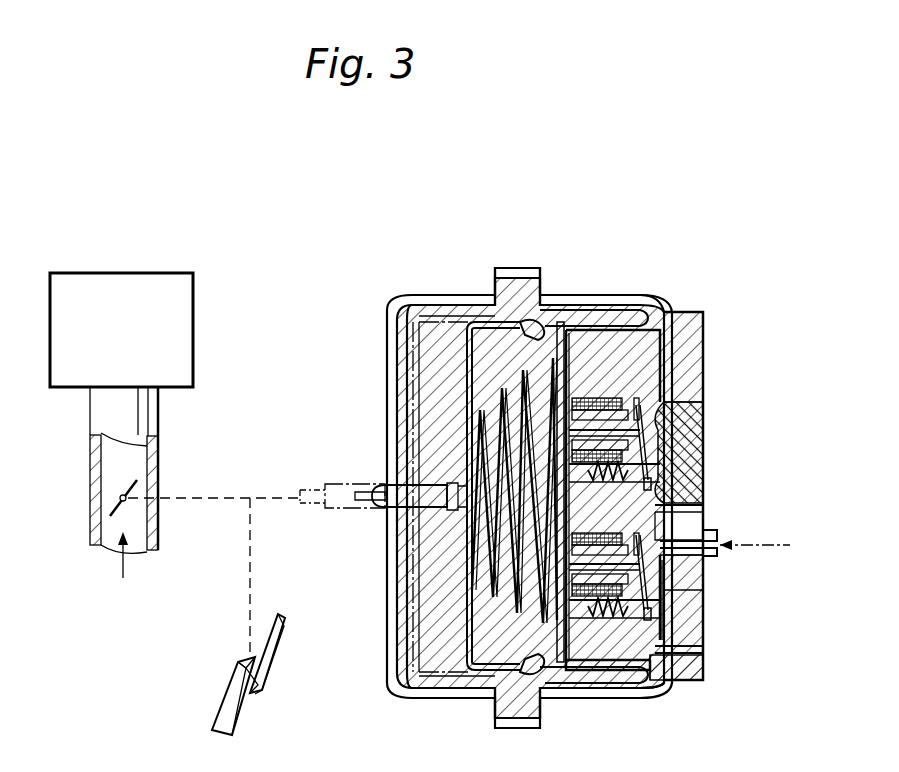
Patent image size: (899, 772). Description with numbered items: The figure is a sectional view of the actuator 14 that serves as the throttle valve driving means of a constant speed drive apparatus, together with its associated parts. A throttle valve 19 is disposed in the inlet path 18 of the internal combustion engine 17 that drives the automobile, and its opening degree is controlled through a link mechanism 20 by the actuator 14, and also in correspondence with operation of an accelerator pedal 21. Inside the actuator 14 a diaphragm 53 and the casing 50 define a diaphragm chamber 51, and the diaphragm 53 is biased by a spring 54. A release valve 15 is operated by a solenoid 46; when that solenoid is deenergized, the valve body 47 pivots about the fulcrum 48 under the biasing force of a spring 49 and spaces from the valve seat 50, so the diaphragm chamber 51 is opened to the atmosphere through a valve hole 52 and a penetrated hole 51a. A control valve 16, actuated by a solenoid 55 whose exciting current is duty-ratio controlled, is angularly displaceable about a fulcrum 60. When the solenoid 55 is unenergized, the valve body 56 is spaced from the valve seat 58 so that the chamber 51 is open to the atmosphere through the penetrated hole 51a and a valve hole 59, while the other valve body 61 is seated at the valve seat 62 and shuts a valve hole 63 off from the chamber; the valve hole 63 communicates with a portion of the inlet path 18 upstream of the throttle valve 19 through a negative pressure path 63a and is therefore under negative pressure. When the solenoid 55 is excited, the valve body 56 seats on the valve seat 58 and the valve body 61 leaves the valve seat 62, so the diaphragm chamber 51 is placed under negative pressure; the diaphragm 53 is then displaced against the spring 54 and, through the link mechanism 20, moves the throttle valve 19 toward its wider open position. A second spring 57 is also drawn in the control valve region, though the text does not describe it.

The actuator 14 is at (398, 360).
The release valve 15 is at (703, 440).
The control valve 16 is at (705, 655).
The internal combustion engine 17 is at (175, 296).
The inlet path 18 is at (150, 452).
The throttle valve 19 is at (110, 508).
The link mechanism 20 is at (205, 497).
The accelerator pedal 21 is at (228, 698).
The solenoid 46 is at (603, 400).
The valve body 47 is at (650, 510).
The fulcrum 48 is at (705, 412).
The spring 49 is at (614, 487).
The valve seat 50 is at (700, 480).
The diaphragm chamber 51 is at (548, 672).
The penetrated hole 51a is at (555, 322).
The valve hole 52 is at (705, 510).
The diaphragm 53 is at (468, 522).
The spring 54 is at (482, 583).
The solenoid 55 is at (580, 546).
The valve body 56 is at (646, 662).
The second spring 57 is at (620, 616).
The valve seat 58 is at (666, 658).
The valve hole 59 is at (705, 668).
The fulcrum 60 is at (700, 630).
The valve body 61 is at (700, 605).
The valve seat 62 is at (703, 580).
The valve hole 63 is at (710, 530).
The inlet path connection 63a is at (780, 548).